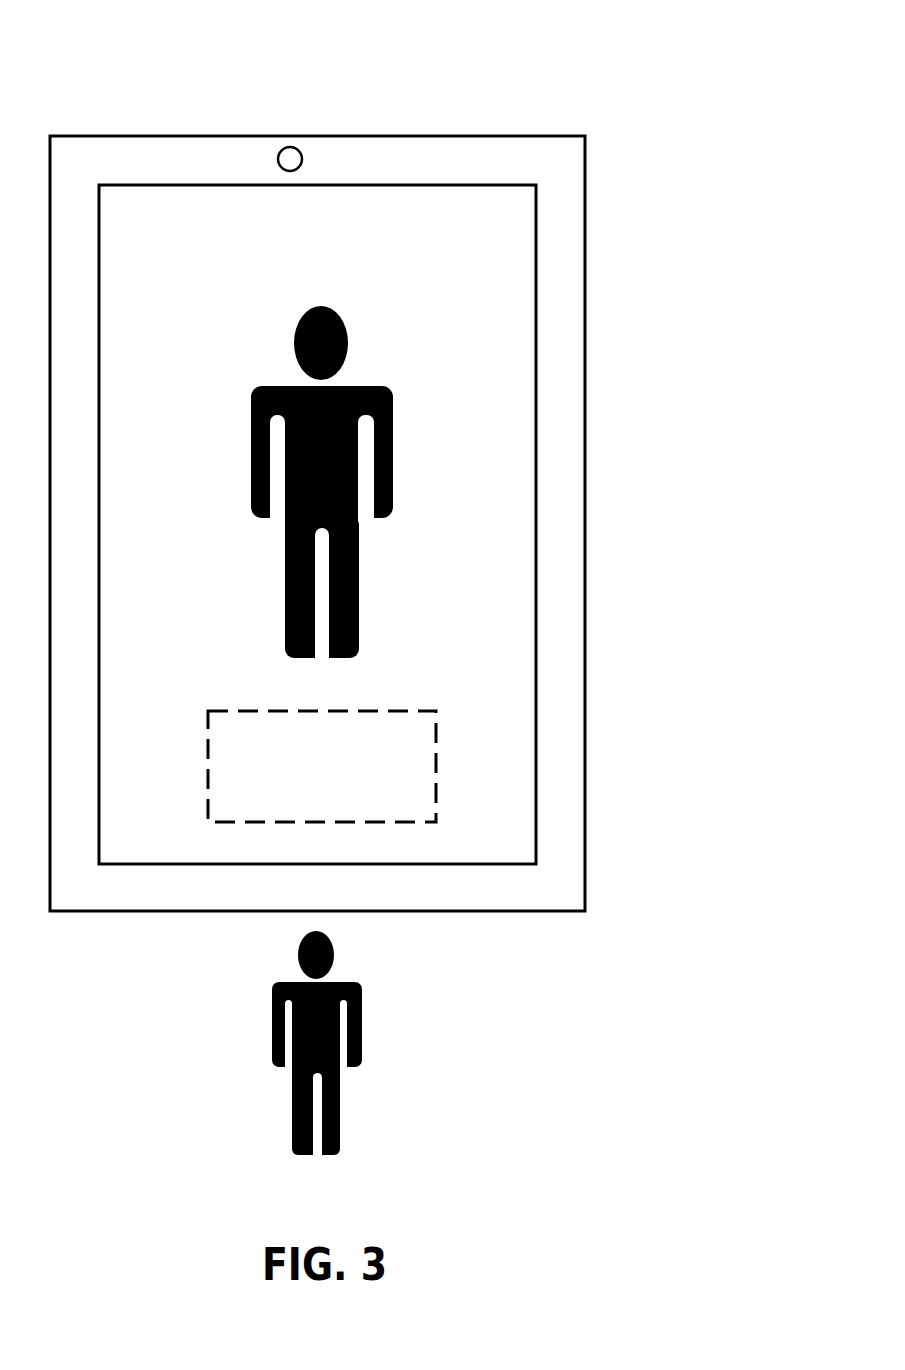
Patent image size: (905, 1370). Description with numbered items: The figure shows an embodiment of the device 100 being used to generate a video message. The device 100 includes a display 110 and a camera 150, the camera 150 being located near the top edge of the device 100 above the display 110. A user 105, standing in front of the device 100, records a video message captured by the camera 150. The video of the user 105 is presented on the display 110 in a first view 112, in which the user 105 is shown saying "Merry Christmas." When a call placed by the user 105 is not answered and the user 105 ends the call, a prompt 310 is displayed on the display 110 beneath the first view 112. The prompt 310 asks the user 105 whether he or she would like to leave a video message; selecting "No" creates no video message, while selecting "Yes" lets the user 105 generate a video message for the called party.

The device 100 is at (437, 94).
The display 110 is at (192, 186).
The camera 150 is at (284, 152).
The first view 112 is at (507, 452).
The prompt 310 is at (436, 744).
The user 105 is at (337, 1192).